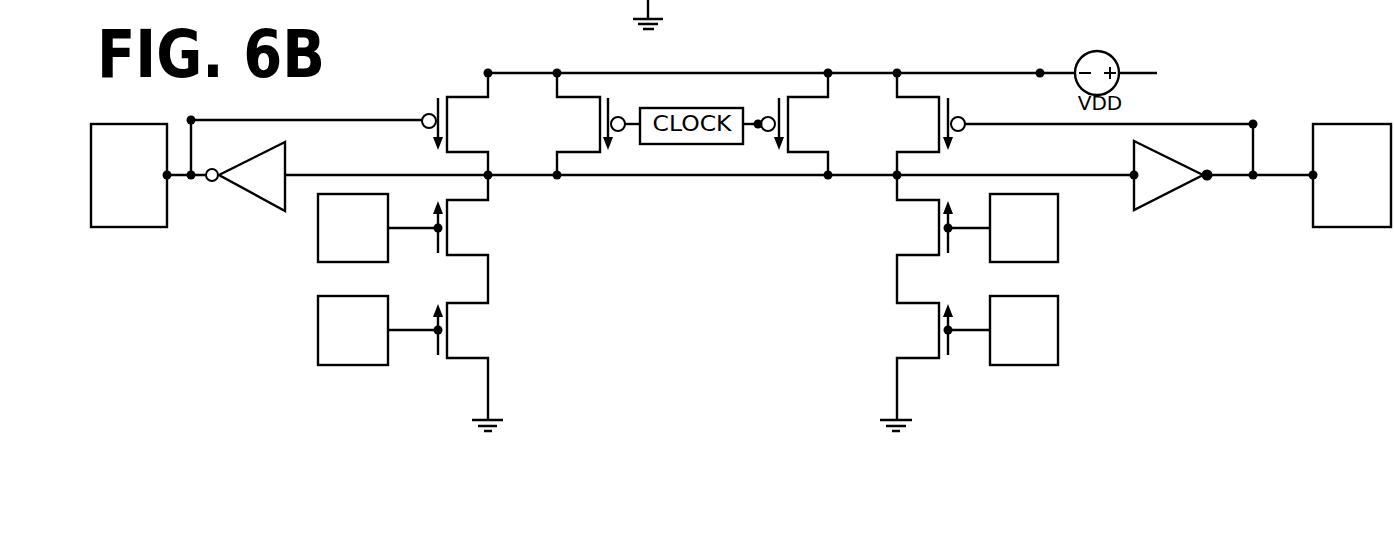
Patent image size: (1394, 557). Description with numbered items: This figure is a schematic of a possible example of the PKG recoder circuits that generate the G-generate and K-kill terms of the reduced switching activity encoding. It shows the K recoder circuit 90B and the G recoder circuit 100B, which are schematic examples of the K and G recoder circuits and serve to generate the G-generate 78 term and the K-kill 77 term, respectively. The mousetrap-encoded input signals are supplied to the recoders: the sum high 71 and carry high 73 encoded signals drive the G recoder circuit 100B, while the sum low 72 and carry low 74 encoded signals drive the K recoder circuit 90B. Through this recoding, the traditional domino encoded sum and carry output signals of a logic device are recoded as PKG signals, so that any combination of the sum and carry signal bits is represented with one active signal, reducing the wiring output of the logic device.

The G-generate term 78 is at (116, 203).
The K-kill term 77 is at (1339, 203).
The sum high encoded signal 71 is at (341, 254).
The carry high encoded signal 73 is at (341, 357).
The sum low encoded signal 72 is at (1012, 254).
The carry low encoded signal 74 is at (1012, 357).
The G recoder circuit 100B is at (575, 286).
The K recoder circuit 90B is at (825, 286).